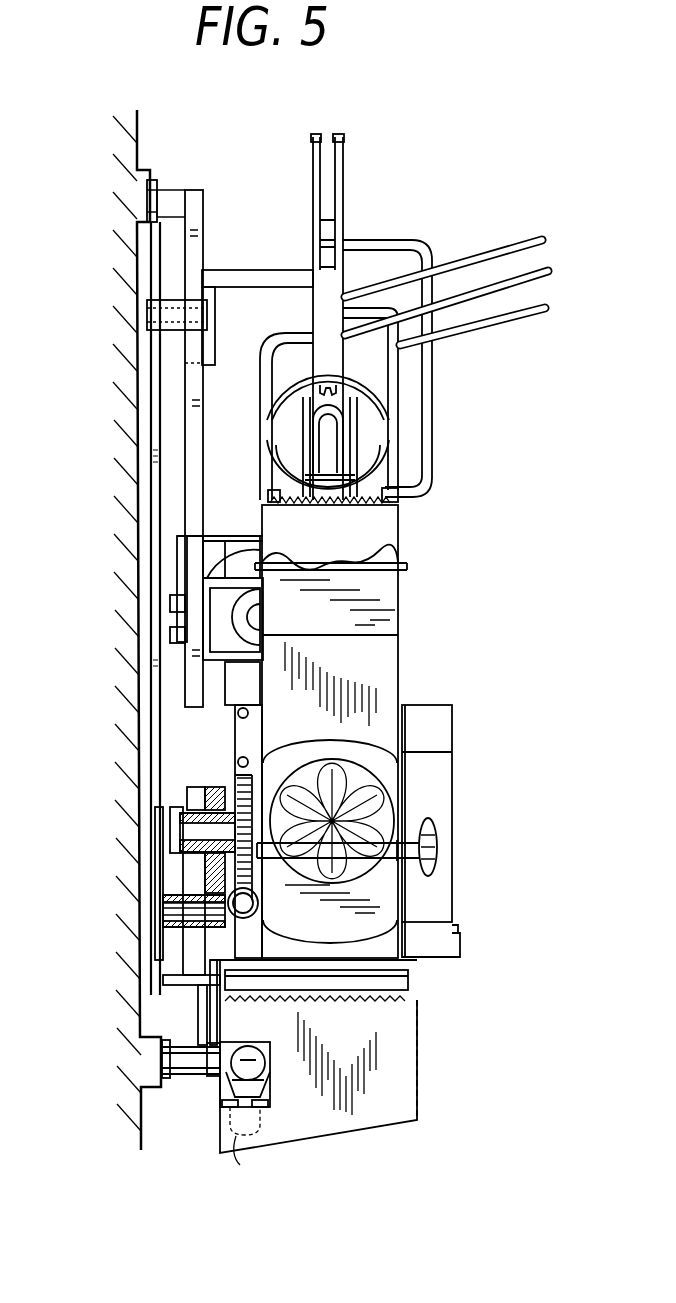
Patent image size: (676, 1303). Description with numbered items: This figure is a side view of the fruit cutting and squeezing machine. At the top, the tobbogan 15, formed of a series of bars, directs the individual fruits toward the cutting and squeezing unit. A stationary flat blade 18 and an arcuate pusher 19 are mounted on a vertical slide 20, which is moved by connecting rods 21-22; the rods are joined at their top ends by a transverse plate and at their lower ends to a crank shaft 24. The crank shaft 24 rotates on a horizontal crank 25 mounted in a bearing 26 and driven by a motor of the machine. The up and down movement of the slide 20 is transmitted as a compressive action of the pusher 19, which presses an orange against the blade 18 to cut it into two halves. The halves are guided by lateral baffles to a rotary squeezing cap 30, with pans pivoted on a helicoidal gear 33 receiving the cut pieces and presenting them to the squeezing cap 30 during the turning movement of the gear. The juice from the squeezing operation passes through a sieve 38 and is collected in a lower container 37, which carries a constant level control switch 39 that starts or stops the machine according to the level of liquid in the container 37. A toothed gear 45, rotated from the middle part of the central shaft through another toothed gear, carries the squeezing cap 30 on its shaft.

The tobbogan 15 is at (494, 316).
The stationary flat blade 18 is at (395, 603).
The arcuate pusher 19 is at (378, 398).
The vertical slide 20 is at (320, 322).
The connecting rods 21-22 is at (142, 458).
The crank shaft 24 is at (185, 796).
The horizontal crank 25 is at (192, 832).
The bearing 26 is at (200, 852).
The rotary squeezing cap 30 is at (377, 793).
The helicoidal gear 33 is at (260, 878).
The lower container 37 is at (340, 1120).
The sieve 38 is at (385, 998).
The constant level control switch 39 is at (232, 1078).
The toothed gear 45 is at (186, 970).